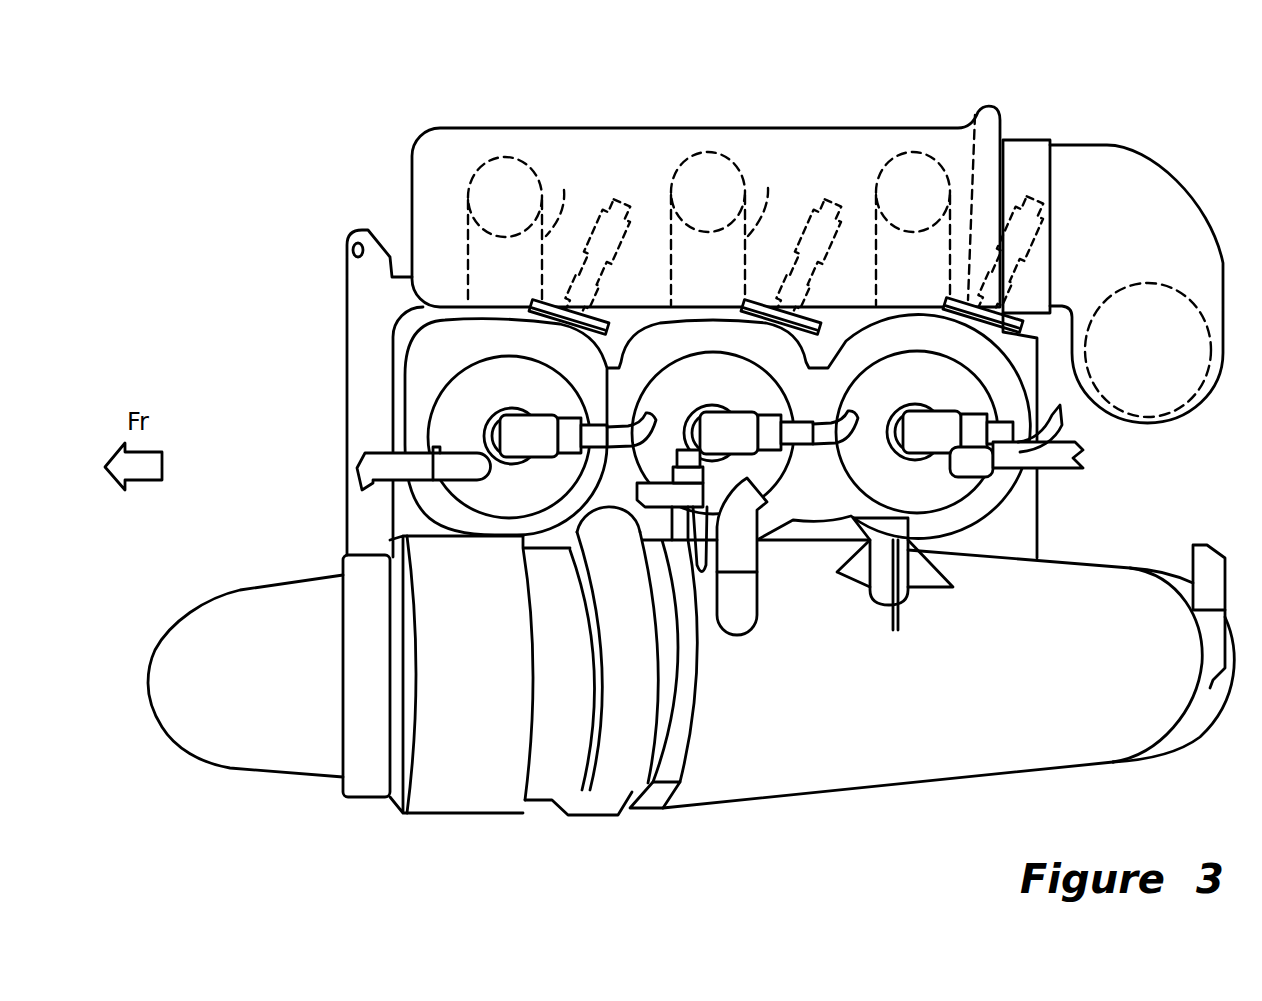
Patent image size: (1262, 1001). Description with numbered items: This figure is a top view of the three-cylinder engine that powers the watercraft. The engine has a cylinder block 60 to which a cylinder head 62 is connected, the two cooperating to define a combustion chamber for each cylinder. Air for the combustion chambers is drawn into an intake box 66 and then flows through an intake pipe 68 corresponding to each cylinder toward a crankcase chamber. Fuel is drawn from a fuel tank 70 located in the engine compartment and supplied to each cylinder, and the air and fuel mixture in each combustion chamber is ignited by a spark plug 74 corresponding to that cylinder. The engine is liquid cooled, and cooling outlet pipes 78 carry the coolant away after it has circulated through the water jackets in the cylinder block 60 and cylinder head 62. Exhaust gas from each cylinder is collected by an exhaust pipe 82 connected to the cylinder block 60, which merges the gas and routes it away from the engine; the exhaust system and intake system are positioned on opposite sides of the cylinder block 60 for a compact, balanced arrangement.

The cylinder block 60 is at (343, 320).
The cylinder head 62 is at (930, 487).
The intake box 66 is at (460, 128).
The intake pipe 68 is at (988, 80).
The fuel tank 70 is at (636, 203).
The spark plug 74 is at (683, 433).
The cooling outlet pipes 78 is at (357, 470).
The exhaust pipe 82 is at (773, 797).